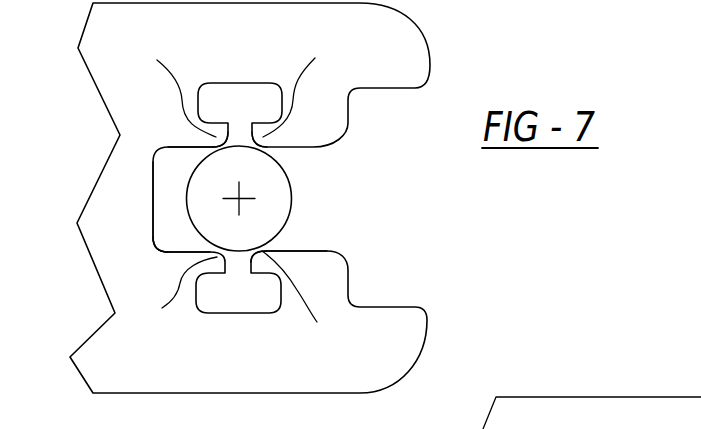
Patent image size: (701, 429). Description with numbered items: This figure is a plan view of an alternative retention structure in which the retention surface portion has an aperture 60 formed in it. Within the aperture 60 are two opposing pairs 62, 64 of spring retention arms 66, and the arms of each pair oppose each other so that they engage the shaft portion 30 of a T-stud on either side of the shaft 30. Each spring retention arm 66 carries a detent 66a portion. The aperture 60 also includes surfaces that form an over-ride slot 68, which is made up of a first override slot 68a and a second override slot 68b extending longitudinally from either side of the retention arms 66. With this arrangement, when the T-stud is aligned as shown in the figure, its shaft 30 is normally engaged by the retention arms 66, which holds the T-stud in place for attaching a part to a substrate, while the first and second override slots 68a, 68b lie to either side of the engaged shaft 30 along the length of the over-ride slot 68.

The aperture 60 is at (313, 147).
The shaft portion 30 is at (292, 202).
The first opposing pair of spring retention arms 62 is at (291, 238).
The second opposing pair of spring retention arms 64 is at (277, 151).
The spring retention arm 66 is at (238, 190).
The detent portion 66a is at (212, 146).
The over-ride slot 68 is at (157, 198).
The first override slot 68a is at (157, 250).
The second override slot 68b is at (303, 257).